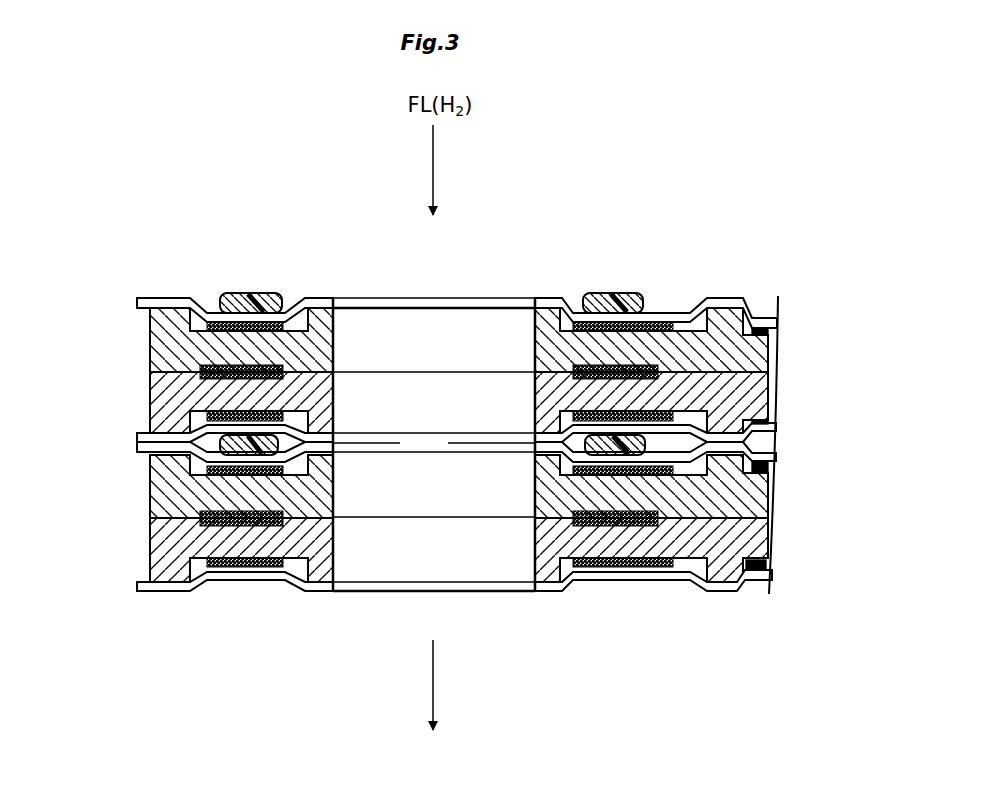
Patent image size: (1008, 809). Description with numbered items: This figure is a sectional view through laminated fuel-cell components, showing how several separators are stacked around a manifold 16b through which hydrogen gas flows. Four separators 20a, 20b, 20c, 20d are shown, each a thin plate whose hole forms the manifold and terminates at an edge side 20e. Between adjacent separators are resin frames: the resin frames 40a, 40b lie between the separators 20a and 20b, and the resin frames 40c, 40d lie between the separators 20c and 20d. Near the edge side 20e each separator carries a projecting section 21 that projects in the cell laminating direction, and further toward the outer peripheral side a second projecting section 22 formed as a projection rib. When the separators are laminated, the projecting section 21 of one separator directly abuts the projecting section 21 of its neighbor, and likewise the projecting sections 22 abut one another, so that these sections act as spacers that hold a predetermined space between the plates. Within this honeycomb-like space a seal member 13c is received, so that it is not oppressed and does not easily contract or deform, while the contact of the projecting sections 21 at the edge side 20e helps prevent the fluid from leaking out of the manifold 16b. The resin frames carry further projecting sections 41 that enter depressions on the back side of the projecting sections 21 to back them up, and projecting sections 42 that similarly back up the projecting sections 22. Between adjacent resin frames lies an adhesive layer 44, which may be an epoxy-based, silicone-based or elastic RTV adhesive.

The seal member 13c is at (245, 295).
The manifold 16b is at (434, 444).
The separator 20a is at (140, 590).
The separator 20b is at (137, 448).
The separator 20c is at (137, 437).
The separator 20d is at (140, 300).
The edge side 20e is at (340, 303).
The projecting section 21 is at (324, 305).
The projecting section 22 is at (150, 430).
The resin frame 40a is at (772, 540).
The resin frame 40b is at (772, 498).
The resin frame 40c is at (772, 378).
The resin frame 40d is at (772, 335).
The projecting section 41 is at (337, 318).
The projecting section 42 is at (138, 307).
The adhesive layer 44 is at (215, 322).